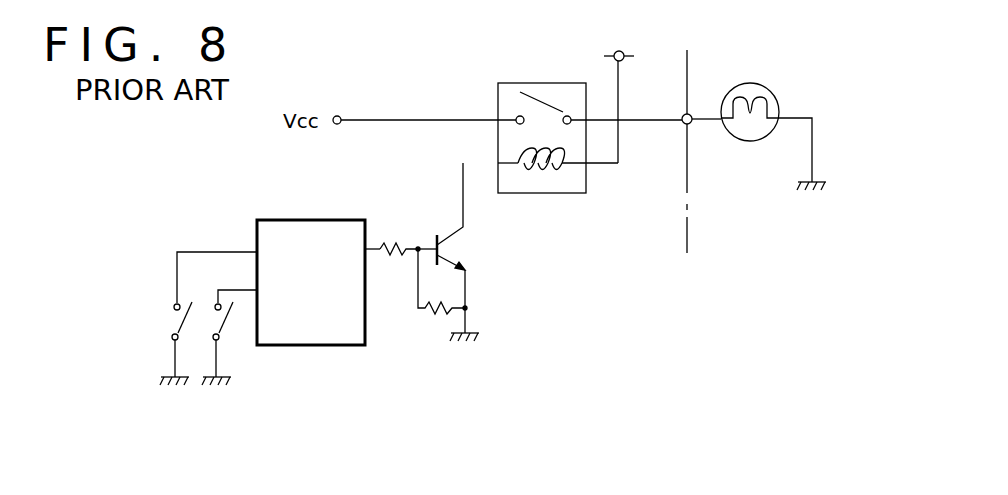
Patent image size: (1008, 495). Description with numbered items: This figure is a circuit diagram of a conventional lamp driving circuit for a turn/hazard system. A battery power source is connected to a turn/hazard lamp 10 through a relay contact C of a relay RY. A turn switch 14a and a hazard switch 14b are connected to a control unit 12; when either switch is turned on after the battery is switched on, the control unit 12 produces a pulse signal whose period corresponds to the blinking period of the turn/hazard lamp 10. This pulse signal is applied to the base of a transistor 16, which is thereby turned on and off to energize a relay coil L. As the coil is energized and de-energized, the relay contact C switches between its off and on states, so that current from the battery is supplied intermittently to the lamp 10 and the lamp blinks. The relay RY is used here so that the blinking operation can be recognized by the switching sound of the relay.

The turn/hazard lamp 10 is at (752, 84).
The control unit 12 is at (302, 346).
The turn switch 14a is at (190, 335).
The switch 14b is at (228, 335).
The transistor 16 is at (450, 248).
The relay RY is at (522, 83).
The relay contact C is at (565, 104).
The relay coil L is at (545, 170).